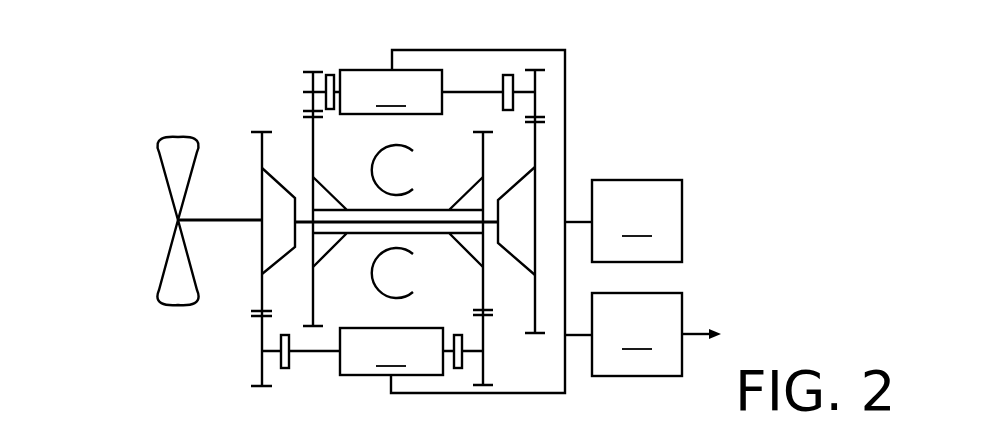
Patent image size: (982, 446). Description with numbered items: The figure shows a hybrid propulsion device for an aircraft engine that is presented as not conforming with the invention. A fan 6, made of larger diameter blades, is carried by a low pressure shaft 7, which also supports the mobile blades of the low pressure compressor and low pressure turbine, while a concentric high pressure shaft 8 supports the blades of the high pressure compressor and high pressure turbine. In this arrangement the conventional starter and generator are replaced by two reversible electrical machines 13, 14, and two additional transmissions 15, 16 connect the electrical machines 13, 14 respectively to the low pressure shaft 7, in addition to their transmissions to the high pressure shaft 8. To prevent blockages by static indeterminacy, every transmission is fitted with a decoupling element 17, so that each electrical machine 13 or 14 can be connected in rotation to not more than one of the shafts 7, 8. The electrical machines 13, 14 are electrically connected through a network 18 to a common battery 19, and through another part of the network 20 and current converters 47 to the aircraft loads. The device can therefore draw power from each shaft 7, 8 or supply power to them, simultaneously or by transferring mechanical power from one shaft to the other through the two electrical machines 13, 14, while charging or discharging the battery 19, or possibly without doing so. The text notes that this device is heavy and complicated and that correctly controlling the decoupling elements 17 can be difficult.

The fan 6 is at (168, 274).
The low pressure shaft 7 is at (224, 217).
The high pressure shaft 8 is at (370, 236).
The reversible electrical machine 13 is at (419, 92).
The reversible electrical machine 14 is at (372, 351).
The additional transmission 15 is at (543, 134).
The additional transmission 16 is at (250, 339).
The decoupling element 17 is at (328, 77).
The network 18 is at (512, 394).
The battery 19 is at (623, 221).
The network 20 is at (700, 331).
The current converters 47 is at (623, 334).